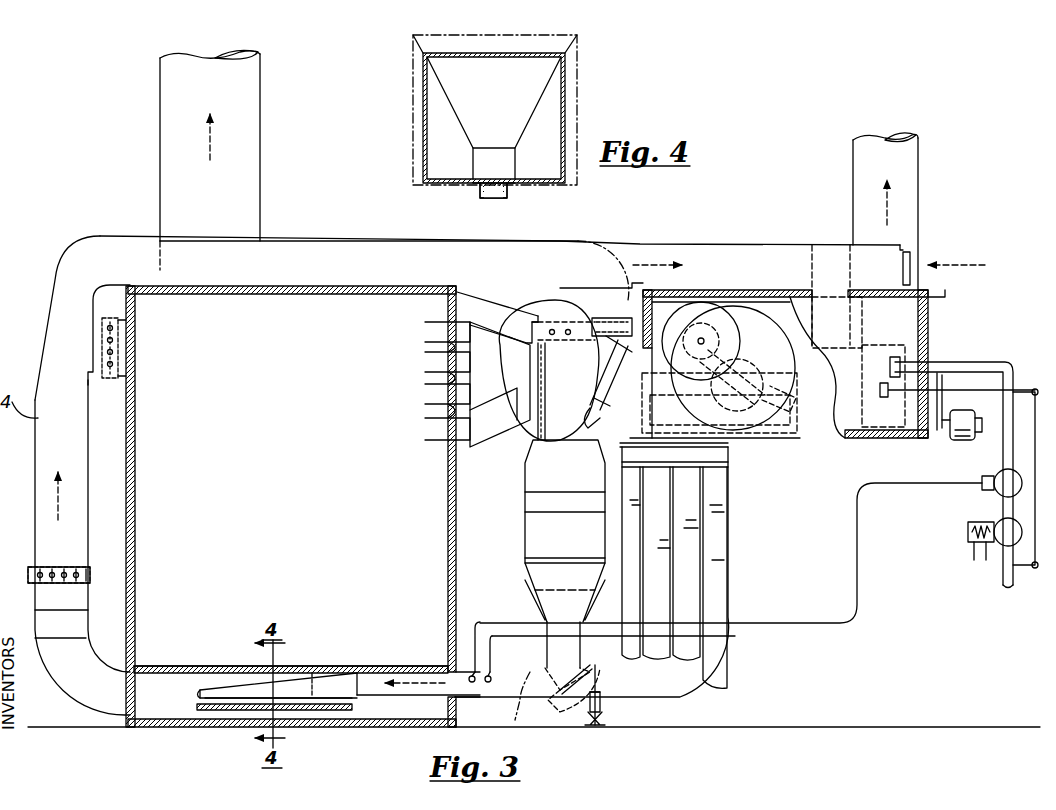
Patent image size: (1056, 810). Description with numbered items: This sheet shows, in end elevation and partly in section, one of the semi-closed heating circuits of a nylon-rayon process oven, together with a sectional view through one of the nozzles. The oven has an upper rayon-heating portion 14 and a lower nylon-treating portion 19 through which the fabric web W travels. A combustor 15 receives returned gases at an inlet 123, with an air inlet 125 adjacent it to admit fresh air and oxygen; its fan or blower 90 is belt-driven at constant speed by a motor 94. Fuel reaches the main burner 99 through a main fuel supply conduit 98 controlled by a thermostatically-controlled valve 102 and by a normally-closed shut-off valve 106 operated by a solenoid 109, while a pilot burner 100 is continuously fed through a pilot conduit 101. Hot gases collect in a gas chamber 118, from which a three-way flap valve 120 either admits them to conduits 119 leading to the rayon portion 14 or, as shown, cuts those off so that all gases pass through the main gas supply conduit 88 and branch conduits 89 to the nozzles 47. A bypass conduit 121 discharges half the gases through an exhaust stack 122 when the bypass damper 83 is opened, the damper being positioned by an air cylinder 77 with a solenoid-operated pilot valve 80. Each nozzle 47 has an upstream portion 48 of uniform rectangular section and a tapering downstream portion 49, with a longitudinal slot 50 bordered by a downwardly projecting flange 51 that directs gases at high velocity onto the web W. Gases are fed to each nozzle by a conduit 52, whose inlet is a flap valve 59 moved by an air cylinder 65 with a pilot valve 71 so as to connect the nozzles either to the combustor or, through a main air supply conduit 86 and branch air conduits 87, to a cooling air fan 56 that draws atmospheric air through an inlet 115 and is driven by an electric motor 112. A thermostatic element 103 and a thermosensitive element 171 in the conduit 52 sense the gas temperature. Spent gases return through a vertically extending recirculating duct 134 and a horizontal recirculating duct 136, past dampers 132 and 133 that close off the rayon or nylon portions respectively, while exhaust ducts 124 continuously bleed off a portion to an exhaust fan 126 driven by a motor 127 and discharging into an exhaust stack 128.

In FIG. 3, the upper portion of the nylon-rayon process oven 14 is at (242, 462).
In FIG. 3, the combustor 15 is at (950, 318).
In FIG. 3, the lower portion of the nylon-rayon process oven 19 is at (176, 662).
In FIG. 4, the nozzle 47 is at (425, 78).
In FIG. 3, the nozzle 47 is at (198, 688).
In FIG. 4, the upstream portion 48 is at (577, 125).
In FIG. 3, the upstream portion 48 is at (330, 676).
In FIG. 4, the downstream portion 49 is at (425, 124).
In FIG. 3, the downstream portion 49 is at (252, 686).
In FIG. 4, the longitudinal slot 50 is at (493, 190).
In FIG. 4, the downwardly projecting flange 51 is at (478, 193).
In FIG. 3, the downwardly projecting flange 51 is at (355, 699).
In FIG. 3, the conduit 52 is at (455, 692).
In FIG. 3, the cooling air fan 56 is at (755, 318).
In FIG. 3, the flap valve 59 is at (555, 700).
In FIG. 3, the air cylinder 65 is at (590, 712).
In FIG. 3, the solenoid-operated pilot valve 71 is at (604, 722).
In FIG. 3, the air cylinder 77 is at (614, 378).
In FIG. 3, the solenoid-operated pilot valve 80 is at (535, 330).
In FIG. 3, the bypass valve or damper 83 is at (552, 325).
In FIG. 3, the main air supply conduit 86 is at (725, 470).
In FIG. 3, the branch air conduit 87 is at (680, 690).
In FIG. 3, the main gas supply conduit 88 is at (538, 478).
In FIG. 3, the branch conduit 89 is at (555, 640).
In FIG. 3, the fan or blower 90 is at (703, 330).
In FIG. 3, the motor 94 is at (722, 392).
In FIG. 3, the main fuel supply conduit 98 is at (1015, 372).
In FIG. 3, the fuel supply nozzle or main burner 99 is at (888, 360).
In FIG. 3, the pilot burner 100 is at (884, 392).
In FIG. 3, the pilot conduit 101 is at (1032, 575).
In FIG. 3, the thermostatically-controlled valve 102 is at (992, 496).
In FIG. 3, the thermostatic element 103 is at (456, 670).
In FIG. 3, the shut-off valve 106 is at (990, 518).
In FIG. 3, the solenoid 109 is at (966, 548).
In FIG. 3, the electric motor 112 is at (788, 445).
In FIG. 3, the inlet 115 is at (730, 450).
In FIG. 3, the gas chamber 118 is at (540, 410).
In FIG. 3, the conduit 119 is at (430, 425).
In FIG. 3, the three-way or flap valve 120 is at (530, 385).
In FIG. 3, the bypass conduit 121 is at (368, 240).
In FIG. 3, the exhaust stack 122 is at (162, 108).
In FIG. 3, the inlet of the combustor 123 is at (912, 308).
In FIG. 3, the exhaust duct 124 is at (825, 296).
In FIG. 3, the air inlet 125 is at (912, 258).
In FIG. 3, the exhaust fan 126 is at (915, 435).
In FIG. 3, the motor 127 is at (962, 440).
In FIG. 3, the exhaust stack 128 is at (855, 174).
In FIG. 3, the damper 132 is at (126, 348).
In FIG. 3, the damper 133 is at (60, 560).
In FIG. 3, the vertically extending recirculating duct 134 is at (92, 700).
In FIG. 3, the horizontal recirculating duct 136 is at (208, 247).
In FIG. 3, the thermosensitive element 171 is at (508, 680).
In FIG. 3, the fabric web W is at (208, 712).